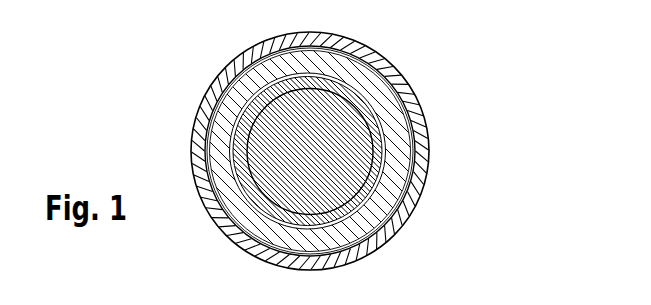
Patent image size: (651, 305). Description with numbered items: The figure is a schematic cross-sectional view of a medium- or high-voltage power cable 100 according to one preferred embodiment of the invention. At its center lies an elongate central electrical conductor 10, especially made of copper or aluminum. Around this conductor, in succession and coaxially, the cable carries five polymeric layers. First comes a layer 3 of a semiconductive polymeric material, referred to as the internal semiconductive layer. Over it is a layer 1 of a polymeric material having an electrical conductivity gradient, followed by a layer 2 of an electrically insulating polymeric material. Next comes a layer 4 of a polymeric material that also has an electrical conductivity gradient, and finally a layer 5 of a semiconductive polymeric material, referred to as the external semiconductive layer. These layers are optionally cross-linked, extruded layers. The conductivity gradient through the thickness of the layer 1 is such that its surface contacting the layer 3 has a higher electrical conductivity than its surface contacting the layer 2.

The medium- or high-voltage power cable 100 is at (393, 246).
The central electrical conductor 10 is at (332, 128).
The layer of a semiconductive polymeric material 3 is at (248, 121).
The layer of a polymeric material having an electrical conductivity gradient 1 is at (388, 172).
The layer of an electrically insulating polymeric material 2 is at (398, 135).
The layer of a polymeric material having an electrical conductivity gradient 4 is at (204, 151).
The layer of a semiconductive polymeric material 5 is at (206, 191).